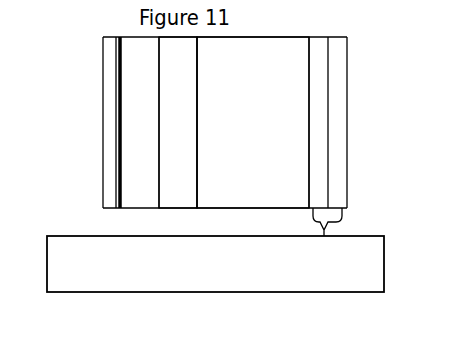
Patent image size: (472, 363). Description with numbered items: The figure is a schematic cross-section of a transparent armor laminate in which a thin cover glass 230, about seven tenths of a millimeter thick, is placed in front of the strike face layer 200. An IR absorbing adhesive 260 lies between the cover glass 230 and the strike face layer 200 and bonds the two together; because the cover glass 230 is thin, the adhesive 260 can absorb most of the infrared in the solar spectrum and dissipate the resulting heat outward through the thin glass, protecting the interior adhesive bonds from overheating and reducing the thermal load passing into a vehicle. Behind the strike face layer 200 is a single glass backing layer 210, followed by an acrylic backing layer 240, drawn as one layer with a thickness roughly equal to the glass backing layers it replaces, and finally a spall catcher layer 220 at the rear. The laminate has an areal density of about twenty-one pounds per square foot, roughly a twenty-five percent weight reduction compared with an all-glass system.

The strike face layer 200 is at (140, 179).
The glass backing layer 210 is at (177, 160).
The spall catcher layer 220 is at (331, 159).
The cover glass 230 is at (100, 202).
The acrylic backing layer 240 is at (253, 160).
The absorbing adhesive 260 is at (121, 201).